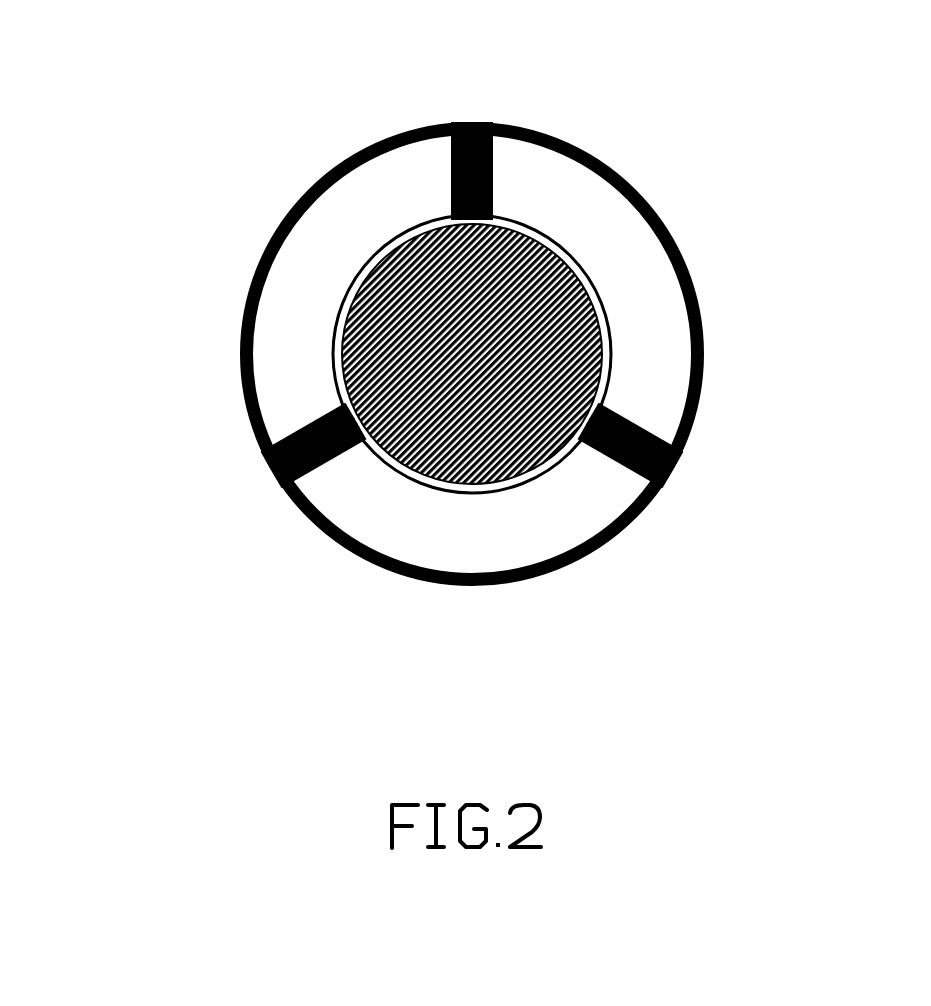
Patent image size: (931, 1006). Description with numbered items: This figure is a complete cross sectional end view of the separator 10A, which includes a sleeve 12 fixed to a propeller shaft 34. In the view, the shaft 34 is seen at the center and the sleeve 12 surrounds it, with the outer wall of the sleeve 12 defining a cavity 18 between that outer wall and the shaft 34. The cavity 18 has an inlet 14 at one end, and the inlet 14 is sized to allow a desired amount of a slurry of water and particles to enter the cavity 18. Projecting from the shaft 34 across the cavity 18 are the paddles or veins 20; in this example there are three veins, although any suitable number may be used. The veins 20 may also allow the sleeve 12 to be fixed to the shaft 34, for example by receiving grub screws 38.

The separator 10A is at (140, 145).
The sleeve 12 is at (317, 523).
The inlet 14 is at (440, 490).
The cavity 18 is at (305, 288).
The paddles or veins 20 is at (293, 437).
The propeller shaft 34 is at (530, 369).
The grub screws 38 is at (472, 120).